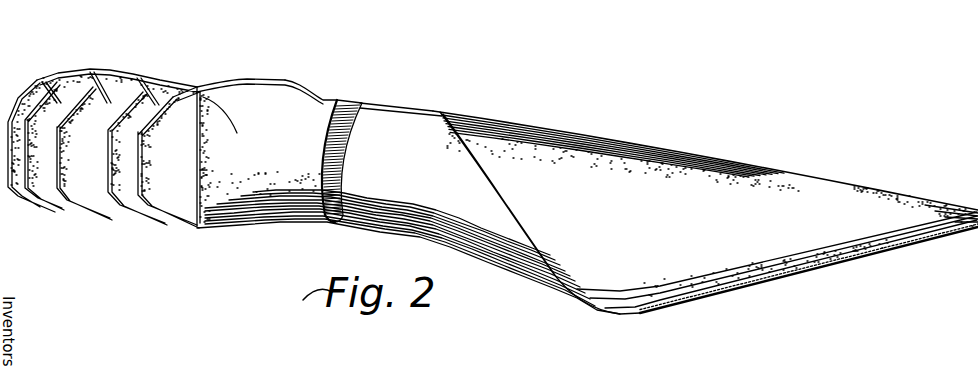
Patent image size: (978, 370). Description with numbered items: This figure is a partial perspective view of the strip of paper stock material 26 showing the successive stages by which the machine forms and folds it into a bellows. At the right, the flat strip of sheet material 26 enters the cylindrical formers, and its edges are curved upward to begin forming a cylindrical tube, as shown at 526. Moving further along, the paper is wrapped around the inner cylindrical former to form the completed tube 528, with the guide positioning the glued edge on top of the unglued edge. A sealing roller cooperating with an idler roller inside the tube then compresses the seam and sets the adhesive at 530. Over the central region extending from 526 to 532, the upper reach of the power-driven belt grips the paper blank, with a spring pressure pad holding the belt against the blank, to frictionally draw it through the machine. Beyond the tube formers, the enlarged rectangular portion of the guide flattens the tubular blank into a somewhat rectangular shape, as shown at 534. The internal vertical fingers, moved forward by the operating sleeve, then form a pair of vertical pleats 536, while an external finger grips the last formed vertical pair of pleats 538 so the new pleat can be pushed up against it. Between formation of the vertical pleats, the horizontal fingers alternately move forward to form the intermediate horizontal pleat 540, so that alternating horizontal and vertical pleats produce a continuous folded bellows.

The strip of paper stock material 26 is at (862, 210).
The curved-edge tube-forming stage 526 is at (698, 156).
The completed tube 528 is at (428, 106).
The compressed and set seam 530 is at (407, 105).
The end of belt-gripping region 532 is at (350, 100).
The flattened rectangular tube stage 534 is at (277, 81).
The pair of vertical pleats 536 is at (248, 81).
The last formed vertical pair of pleats 538 is at (215, 83).
The intermediate horizontal pleat 540 is at (138, 195).